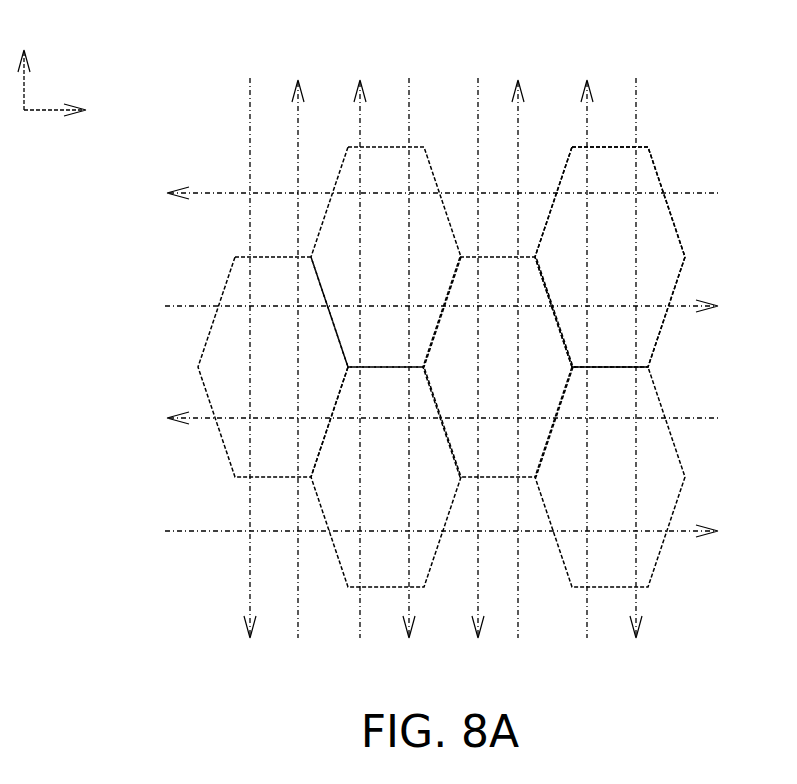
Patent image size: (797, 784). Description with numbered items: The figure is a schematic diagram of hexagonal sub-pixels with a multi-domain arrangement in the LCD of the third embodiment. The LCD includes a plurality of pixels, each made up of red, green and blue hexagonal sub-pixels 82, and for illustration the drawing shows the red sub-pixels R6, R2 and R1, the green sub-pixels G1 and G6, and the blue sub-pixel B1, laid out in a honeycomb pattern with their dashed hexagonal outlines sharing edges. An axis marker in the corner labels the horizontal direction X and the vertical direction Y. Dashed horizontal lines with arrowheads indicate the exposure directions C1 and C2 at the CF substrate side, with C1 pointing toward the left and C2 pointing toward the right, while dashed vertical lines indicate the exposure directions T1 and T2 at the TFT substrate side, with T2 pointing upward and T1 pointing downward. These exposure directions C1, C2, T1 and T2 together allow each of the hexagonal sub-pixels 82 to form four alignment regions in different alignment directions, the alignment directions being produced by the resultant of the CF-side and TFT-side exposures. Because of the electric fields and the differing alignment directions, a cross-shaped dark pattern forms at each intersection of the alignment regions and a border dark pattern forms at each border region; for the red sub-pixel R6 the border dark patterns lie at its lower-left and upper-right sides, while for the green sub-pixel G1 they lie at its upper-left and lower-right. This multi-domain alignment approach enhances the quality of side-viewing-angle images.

The hexagonal sub-pixel 82 is at (658, 233).
The red sub-pixel R6 is at (273, 367).
The green sub-pixel G1 is at (386, 257).
The green sub-pixel G6 is at (386, 477).
The blue sub-pixel B1 is at (498, 367).
The red sub-pixel R1 is at (610, 477).
The red sub-pixel R2 is at (610, 257).
The exposure direction at the TFT substrate side T1 is at (443, 377).
The exposure direction at the TFT substrate side T2 is at (442, 338).
The exposure direction at the CF substrate side C1 is at (422, 305).
The exposure direction at the CF substrate side C2 is at (465, 418).
The X axis X is at (67, 111).
The Y axis Y is at (23, 63).